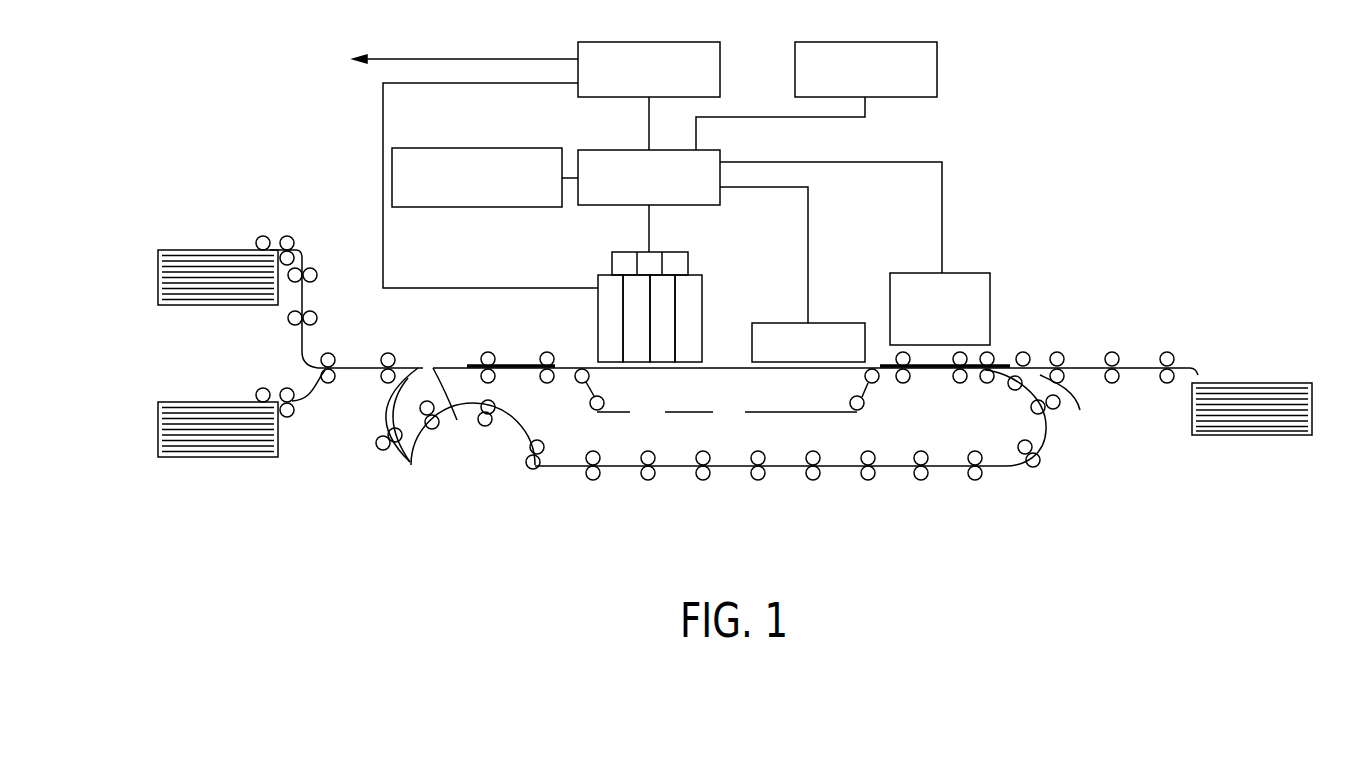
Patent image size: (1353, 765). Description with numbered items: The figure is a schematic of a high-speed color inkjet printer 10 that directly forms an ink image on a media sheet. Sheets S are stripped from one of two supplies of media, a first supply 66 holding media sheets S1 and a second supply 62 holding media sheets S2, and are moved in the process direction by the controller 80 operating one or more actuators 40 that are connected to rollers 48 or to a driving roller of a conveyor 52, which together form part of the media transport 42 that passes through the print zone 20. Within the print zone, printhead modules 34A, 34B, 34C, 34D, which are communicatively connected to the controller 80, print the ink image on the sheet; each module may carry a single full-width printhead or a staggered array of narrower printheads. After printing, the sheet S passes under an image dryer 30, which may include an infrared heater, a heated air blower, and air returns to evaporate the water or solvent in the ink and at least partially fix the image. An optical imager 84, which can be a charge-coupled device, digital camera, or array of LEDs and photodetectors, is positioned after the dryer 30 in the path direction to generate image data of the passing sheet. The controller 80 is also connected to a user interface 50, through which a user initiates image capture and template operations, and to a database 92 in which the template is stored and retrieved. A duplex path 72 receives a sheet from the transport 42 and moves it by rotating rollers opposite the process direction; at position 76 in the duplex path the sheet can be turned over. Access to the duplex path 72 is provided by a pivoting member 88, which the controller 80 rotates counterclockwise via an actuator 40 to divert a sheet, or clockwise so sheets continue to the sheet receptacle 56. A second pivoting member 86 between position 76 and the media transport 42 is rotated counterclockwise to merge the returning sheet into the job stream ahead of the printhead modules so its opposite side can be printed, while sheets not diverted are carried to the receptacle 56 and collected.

The high-speed color inkjet printer 10 is at (1040, 112).
The print zone 20 is at (702, 376).
The image dryer 30 is at (830, 323).
The printhead module 34A is at (600, 308).
The printhead module 34B is at (630, 283).
The printhead module 34C is at (668, 283).
The printhead module 34D is at (695, 305).
The actuators 40 is at (720, 70).
The media transport 42 is at (1035, 338).
The rollers 48 is at (316, 278).
The user interface 50 is at (392, 178).
The conveyor 52 is at (873, 425).
The sheet receptacle 56 is at (1247, 437).
The supply of media sheets 62 is at (215, 459).
The first media tray 66 is at (185, 307).
The duplex path 72 is at (950, 478).
The position in the duplex path 76 is at (398, 478).
The controller 80 is at (578, 150).
The optical imager 84 is at (968, 273).
The pivoting member 86 is at (473, 416).
The pivoting member 88 is at (1064, 411).
The database 92 is at (937, 70).
The media sheets S is at (510, 363).
The media sheets S1 is at (218, 250).
The media sheets S2 is at (218, 402).